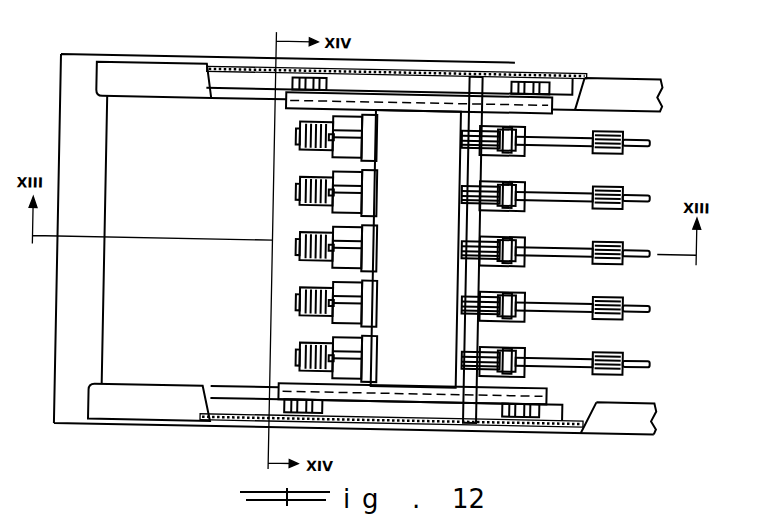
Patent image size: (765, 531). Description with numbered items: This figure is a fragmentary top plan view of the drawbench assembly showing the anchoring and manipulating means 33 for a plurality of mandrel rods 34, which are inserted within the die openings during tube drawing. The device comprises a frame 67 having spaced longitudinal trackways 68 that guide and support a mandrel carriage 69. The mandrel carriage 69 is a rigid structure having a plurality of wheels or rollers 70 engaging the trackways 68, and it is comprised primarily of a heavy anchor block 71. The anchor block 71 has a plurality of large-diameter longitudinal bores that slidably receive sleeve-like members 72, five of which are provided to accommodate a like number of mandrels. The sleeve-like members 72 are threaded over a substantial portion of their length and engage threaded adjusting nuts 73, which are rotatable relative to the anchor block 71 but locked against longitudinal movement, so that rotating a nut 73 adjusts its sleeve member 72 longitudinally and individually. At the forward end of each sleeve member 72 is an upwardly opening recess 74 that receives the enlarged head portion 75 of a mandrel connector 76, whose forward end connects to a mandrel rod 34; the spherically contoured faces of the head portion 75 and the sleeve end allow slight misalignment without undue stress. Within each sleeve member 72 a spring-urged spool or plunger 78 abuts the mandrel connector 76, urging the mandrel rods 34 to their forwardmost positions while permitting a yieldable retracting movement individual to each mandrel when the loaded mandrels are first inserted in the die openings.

The mandrel anchoring and manipulating means 33 is at (176, 284).
The mandrel rods 34 is at (645, 137).
The frame 67 is at (135, 421).
The longitudinal trackways 68 is at (252, 78).
The mandrel carriage 69 is at (420, 284).
The wheels or rollers 70 is at (324, 410).
The anchor block 71 is at (431, 116).
The sleeve-like members 72 is at (313, 137).
The threaded adjusting nuts 73 is at (348, 198).
The upwardly opening recess 74 is at (506, 123).
The enlarged head portion 75 is at (510, 143).
The mandrel connector 76 is at (575, 134).
The spool or plunger 78 is at (486, 236).